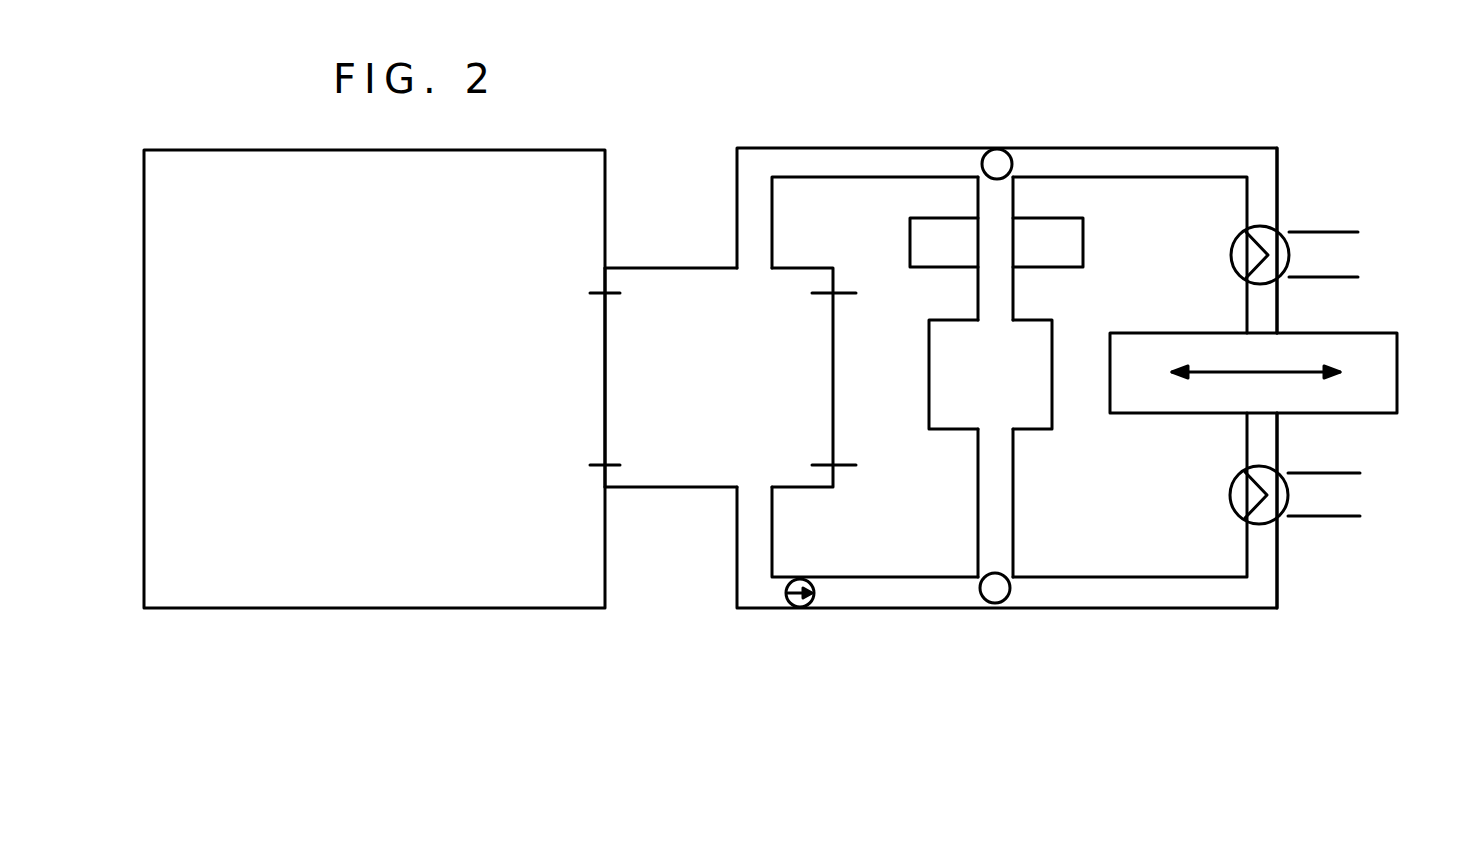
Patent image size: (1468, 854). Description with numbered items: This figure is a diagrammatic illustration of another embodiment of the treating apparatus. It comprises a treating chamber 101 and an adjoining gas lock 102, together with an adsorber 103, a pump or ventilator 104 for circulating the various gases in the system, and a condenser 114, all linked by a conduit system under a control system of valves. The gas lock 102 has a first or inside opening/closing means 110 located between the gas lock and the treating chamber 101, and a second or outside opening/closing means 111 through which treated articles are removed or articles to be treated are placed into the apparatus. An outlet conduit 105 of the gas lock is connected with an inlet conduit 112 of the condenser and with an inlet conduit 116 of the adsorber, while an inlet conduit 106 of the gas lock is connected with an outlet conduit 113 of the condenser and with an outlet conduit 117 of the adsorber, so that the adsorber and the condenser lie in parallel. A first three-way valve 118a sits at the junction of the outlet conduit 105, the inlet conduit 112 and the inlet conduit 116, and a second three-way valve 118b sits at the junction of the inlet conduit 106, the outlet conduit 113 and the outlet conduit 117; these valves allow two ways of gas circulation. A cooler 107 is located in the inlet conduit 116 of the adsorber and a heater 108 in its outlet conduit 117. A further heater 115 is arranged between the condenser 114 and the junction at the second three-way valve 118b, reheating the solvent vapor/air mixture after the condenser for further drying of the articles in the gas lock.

The treating chamber 101 is at (288, 568).
The gas lock 102 is at (703, 420).
The adsorber 103 is at (1352, 352).
The pump or ventilator 104 is at (813, 605).
The outlet conduit of the gas lock 105 is at (757, 592).
The inlet conduit of the gas lock 106 is at (822, 163).
The cooler 107 is at (1275, 502).
The heater 108 is at (1275, 248).
The first or inside opening/closing means 110 is at (603, 403).
The second or outside opening/closing means 111 is at (833, 417).
The inlet conduit of the condenser 112 is at (1013, 493).
The outlet conduit of the condenser 113 is at (1013, 197).
The condenser 114 is at (1050, 394).
The heater 115 is at (1062, 245).
The inlet conduit of the adsorber 116 is at (1265, 585).
The outlet conduit of the adsorber 117 is at (1263, 185).
The first three-way valve 118a is at (998, 592).
The second three-way valve 118b is at (997, 162).